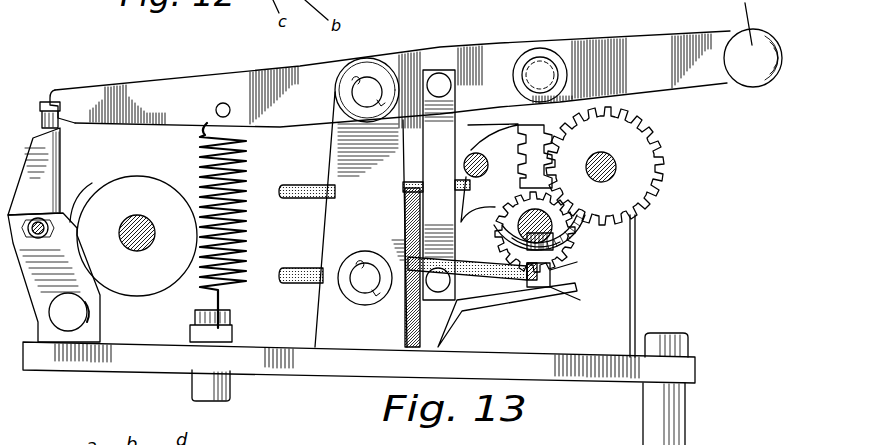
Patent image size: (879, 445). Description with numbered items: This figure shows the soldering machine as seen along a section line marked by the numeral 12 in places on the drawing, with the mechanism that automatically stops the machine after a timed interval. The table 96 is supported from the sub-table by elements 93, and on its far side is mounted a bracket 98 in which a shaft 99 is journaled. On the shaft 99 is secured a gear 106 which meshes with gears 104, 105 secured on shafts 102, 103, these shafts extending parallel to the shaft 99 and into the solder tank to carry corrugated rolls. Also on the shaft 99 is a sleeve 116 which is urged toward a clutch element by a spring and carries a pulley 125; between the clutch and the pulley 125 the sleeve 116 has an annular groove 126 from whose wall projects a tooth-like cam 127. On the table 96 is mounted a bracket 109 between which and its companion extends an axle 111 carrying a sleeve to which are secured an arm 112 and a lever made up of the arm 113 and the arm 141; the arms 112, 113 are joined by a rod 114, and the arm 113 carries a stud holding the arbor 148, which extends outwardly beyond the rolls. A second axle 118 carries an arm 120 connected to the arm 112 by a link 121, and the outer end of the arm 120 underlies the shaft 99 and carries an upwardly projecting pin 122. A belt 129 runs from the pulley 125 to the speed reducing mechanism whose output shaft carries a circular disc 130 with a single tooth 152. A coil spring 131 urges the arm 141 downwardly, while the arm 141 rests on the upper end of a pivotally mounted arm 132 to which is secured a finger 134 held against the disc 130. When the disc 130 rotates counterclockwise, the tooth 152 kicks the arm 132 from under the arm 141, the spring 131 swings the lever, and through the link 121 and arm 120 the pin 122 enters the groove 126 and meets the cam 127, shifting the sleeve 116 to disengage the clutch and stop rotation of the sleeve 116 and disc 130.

The section line 12 is at (258, 250).
The elements 93 is at (203, 387).
The table 96 is at (92, 355).
The bracket 98 is at (637, 308).
The shaft 99 is at (580, 242).
The shaft 102 is at (474, 150).
The shaft 103 is at (613, 163).
The gear 104 is at (492, 212).
The gear 105 is at (625, 133).
The gear 106 is at (572, 217).
The bracket 109 is at (345, 152).
The axle 111 is at (369, 88).
The arm 112 is at (452, 60).
The arm 113 is at (621, 58).
The rod 114 is at (543, 62).
The sleeve 116 is at (563, 267).
The axle 118 is at (365, 280).
The arm 120 is at (465, 293).
The link 121 is at (428, 208).
The pin 122 is at (538, 292).
The pulley 125 is at (557, 293).
The annular groove 126 is at (522, 282).
The tooth-like cam 127 is at (558, 263).
The belt 129 is at (308, 196).
The circular disc 130 is at (142, 285).
The coil spring 131 is at (204, 128).
The arm 132 is at (36, 130).
The finger 134 is at (60, 222).
The arm 141 is at (144, 97).
The arbor 148 is at (527, 60).
The tooth 152 is at (80, 206).